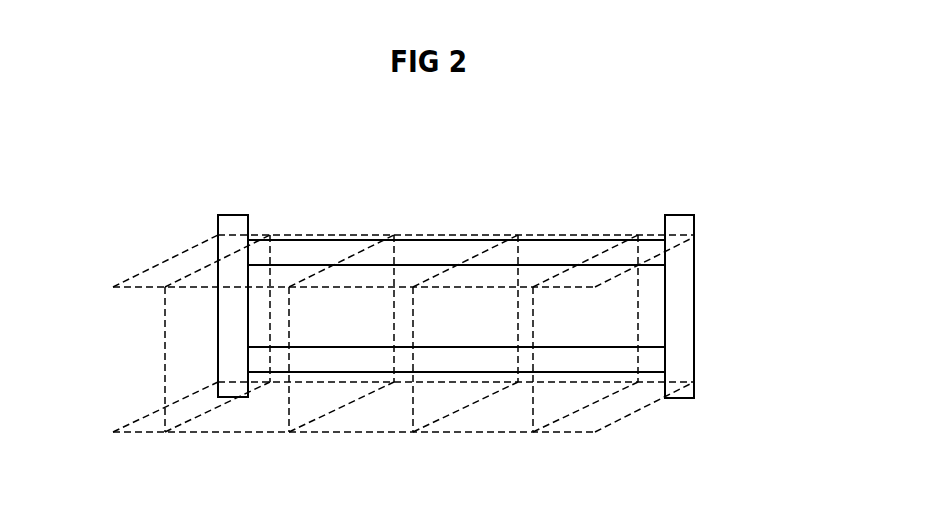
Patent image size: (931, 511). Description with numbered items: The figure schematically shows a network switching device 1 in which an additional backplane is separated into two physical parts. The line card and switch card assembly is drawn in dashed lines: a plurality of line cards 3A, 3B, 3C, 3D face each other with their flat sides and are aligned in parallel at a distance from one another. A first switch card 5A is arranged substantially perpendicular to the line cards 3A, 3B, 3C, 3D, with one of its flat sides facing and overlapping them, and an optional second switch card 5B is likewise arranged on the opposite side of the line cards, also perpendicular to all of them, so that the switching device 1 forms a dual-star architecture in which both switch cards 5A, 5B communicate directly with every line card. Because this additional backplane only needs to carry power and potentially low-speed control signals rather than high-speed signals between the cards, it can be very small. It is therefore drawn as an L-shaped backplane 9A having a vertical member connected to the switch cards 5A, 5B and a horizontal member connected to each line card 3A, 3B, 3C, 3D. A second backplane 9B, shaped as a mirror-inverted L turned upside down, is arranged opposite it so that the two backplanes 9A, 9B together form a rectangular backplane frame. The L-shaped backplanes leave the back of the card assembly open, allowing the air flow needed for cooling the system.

The network switching device 1 is at (743, 168).
The line card 3A is at (257, 242).
The line card 3B is at (378, 242).
The line card 3C is at (503, 242).
The line card 3D is at (627, 242).
The first switch card 5A is at (170, 258).
The second switch card 5B is at (655, 403).
The backplane 9A is at (218, 343).
The second backplane 9B is at (694, 305).